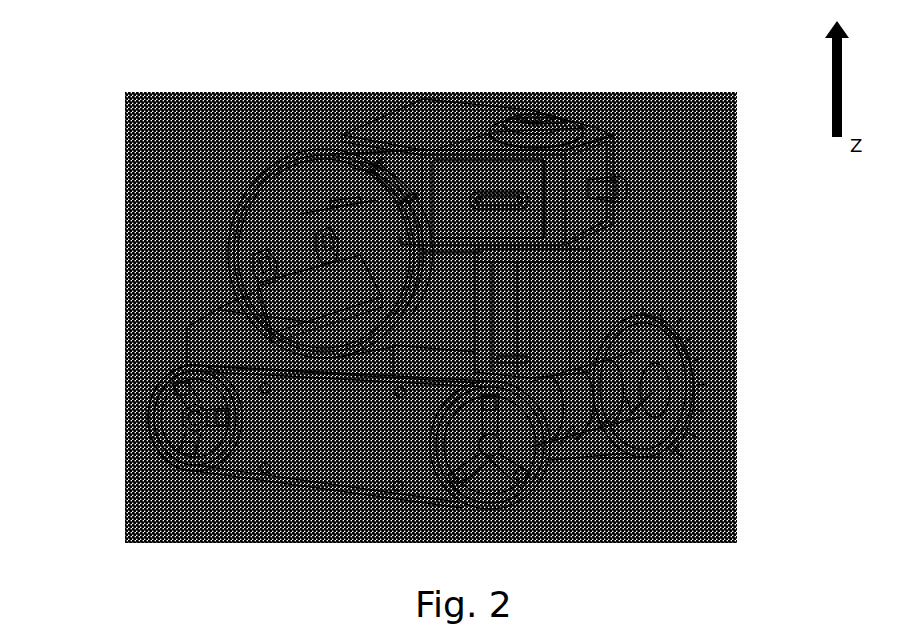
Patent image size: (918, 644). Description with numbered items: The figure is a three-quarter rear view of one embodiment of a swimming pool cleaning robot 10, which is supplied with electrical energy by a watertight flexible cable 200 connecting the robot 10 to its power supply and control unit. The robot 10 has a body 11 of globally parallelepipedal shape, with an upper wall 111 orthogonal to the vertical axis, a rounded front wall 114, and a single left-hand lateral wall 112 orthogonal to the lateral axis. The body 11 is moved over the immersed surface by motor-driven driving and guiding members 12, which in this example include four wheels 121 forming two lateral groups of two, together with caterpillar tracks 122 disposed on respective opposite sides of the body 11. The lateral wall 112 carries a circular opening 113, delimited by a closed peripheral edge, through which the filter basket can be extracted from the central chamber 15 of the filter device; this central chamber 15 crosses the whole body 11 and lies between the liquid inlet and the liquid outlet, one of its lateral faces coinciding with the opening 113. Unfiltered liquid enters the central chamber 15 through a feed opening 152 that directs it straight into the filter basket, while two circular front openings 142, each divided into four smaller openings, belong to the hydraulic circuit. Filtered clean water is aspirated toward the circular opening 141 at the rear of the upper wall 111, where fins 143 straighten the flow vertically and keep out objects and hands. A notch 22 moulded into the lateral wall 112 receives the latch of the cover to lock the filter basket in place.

The swimming pool cleaning robot 10 is at (195, 147).
The body 11 is at (600, 158).
The driving and guiding members 12 is at (705, 580).
The central chamber 15 is at (262, 208).
The notch 22 is at (393, 182).
The upper wall 111 is at (441, 108).
The left-hand lateral wall 112 is at (403, 168).
The opening 113 is at (283, 183).
The front wall 114 is at (332, 127).
The wheels 121 is at (543, 492).
The caterpillar tracks 122 is at (565, 462).
The circular opening 141 is at (542, 108).
The front openings 142 is at (320, 240).
The fins 143 is at (558, 117).
The feed opening 152 is at (320, 317).
The watertight flexible cable 200 is at (527, 306).